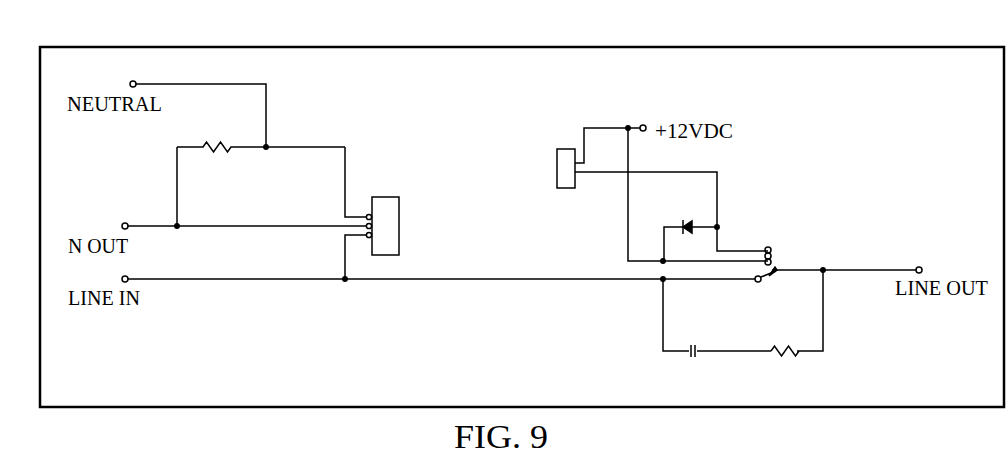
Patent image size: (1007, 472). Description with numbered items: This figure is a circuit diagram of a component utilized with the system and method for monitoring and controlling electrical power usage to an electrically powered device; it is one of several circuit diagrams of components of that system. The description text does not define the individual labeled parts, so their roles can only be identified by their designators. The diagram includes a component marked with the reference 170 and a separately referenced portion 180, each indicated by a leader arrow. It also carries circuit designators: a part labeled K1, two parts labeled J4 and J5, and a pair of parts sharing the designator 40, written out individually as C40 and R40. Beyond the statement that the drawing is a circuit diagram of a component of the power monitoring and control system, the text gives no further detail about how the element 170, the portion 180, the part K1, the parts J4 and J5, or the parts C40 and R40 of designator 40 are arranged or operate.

The relay 170 is at (793, 261).
The snubber circuit 180 is at (743, 337).
The relay switch contact K1 is at (835, 288).
The connector J4 is at (565, 156).
The connector J5 is at (382, 214).
The snubber RC components 40 is at (746, 338).
The snubber capacitor C40 is at (699, 338).
The snubber resistor R40 is at (790, 338).